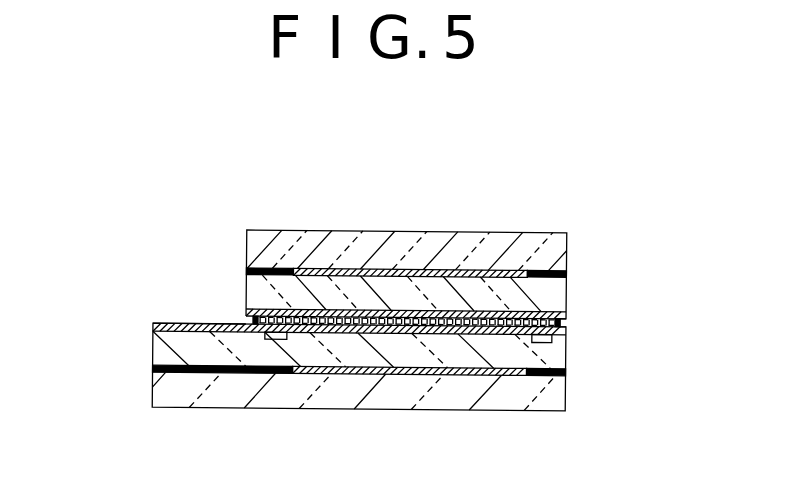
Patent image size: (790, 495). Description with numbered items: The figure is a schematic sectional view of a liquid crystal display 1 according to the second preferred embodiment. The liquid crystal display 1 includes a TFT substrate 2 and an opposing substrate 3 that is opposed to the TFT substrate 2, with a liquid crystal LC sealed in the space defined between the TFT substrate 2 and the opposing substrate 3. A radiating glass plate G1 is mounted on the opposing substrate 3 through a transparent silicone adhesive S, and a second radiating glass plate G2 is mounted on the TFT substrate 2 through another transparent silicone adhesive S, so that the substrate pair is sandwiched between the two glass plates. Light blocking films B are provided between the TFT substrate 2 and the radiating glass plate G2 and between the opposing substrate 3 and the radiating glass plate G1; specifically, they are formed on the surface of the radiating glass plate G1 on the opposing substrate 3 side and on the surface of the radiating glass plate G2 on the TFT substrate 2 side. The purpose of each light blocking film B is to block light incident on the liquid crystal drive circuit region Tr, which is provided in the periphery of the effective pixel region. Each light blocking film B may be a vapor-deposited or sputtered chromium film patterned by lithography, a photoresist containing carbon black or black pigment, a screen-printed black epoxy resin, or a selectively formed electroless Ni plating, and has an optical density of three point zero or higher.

The liquid crystal display 1 is at (185, 225).
The TFT substrate 2 is at (557, 358).
The opposing substrate 3 is at (567, 283).
The radiating glass plate G1 is at (467, 247).
The radiating glass plate G2 is at (553, 403).
The liquid crystal LC is at (560, 322).
The light blocking film B is at (276, 268).
The transparent silicone adhesive S is at (513, 271).
The liquid crystal drive circuit region Tr is at (272, 340).